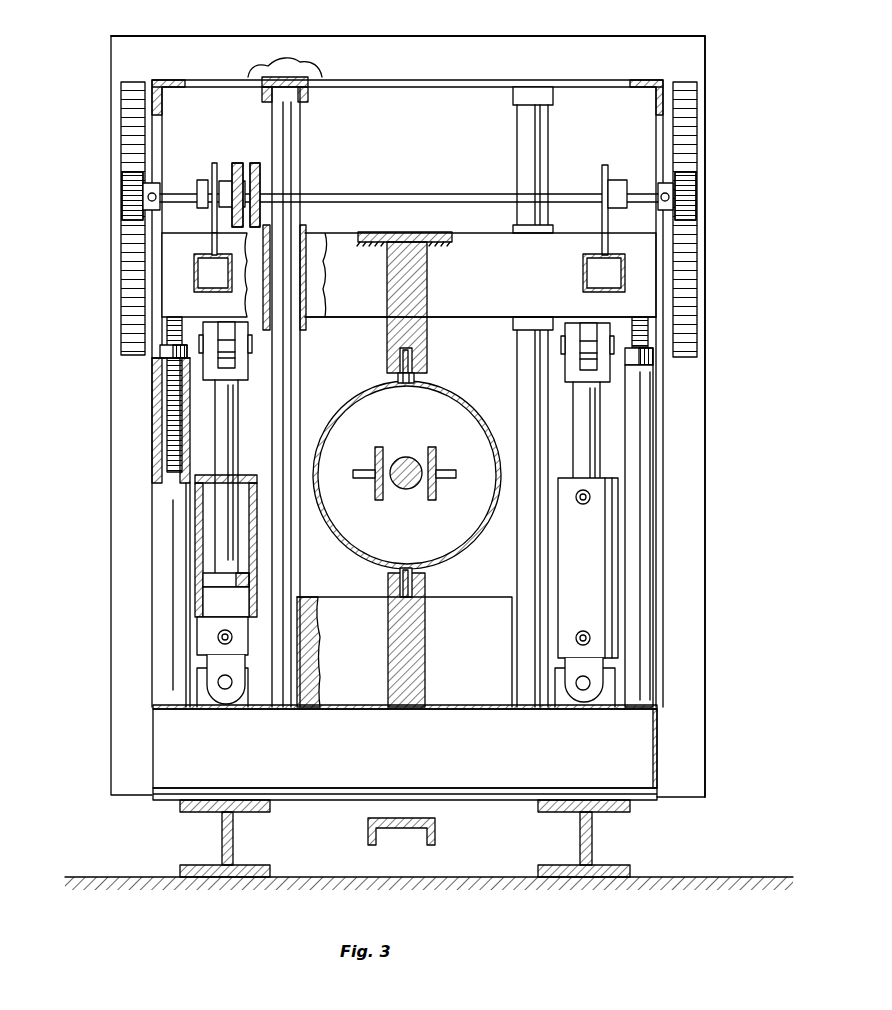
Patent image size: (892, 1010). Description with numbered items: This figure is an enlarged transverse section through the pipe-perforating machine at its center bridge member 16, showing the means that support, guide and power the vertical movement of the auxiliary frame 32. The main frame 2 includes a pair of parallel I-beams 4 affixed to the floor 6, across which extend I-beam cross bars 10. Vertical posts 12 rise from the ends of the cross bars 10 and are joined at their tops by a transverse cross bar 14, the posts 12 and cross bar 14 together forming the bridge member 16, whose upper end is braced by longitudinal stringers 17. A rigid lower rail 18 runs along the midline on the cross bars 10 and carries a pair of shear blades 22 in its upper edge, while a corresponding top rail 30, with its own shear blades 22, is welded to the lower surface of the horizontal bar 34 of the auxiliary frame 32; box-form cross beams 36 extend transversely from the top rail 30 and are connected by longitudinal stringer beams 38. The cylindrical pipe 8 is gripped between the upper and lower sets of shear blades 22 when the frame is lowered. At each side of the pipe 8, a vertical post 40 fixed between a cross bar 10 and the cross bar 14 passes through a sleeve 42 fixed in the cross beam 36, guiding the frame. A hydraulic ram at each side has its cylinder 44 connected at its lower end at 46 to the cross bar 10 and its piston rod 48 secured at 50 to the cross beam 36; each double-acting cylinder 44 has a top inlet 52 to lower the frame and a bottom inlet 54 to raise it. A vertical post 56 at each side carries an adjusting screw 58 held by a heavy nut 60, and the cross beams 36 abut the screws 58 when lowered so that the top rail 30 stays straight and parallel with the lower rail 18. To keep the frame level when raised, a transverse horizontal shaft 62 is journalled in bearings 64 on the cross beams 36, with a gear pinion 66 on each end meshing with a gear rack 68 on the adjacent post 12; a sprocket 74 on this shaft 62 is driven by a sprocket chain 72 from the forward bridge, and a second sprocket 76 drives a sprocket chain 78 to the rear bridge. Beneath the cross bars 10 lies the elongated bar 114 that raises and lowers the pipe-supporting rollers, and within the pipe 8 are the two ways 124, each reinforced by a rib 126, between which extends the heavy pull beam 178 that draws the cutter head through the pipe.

The main frame 2 is at (716, 535).
The I-beams 4 is at (222, 838).
The floor 6 is at (704, 877).
The cylindrical pipe 8 is at (476, 410).
The cross bars 10 is at (640, 748).
The vertical post 12 is at (111, 447).
The cross bar 14 is at (428, 36).
The bridge member 16 is at (716, 485).
The horizontal stringers 17 is at (178, 80).
The lower rail 18 is at (427, 633).
The shear blades 22 is at (398, 378).
The top rail 30 is at (427, 293).
The auxiliary frame 32 is at (490, 238).
The horizontal bar 34 is at (386, 232).
The cross beams 36 is at (345, 322).
The stringer beams 38 is at (198, 273).
The vertical post 40 is at (300, 129).
The sleeves 42 is at (306, 228).
The cylinder 44 is at (252, 475).
The cylinder lower end connection 46 is at (225, 690).
The piston rod 48 is at (238, 419).
The piston rod connection 50 is at (252, 340).
The top inlet 52 is at (581, 505).
The bottom inlet 54 is at (218, 637).
The vertical post 56 is at (160, 575).
The adjusting screw 58 is at (170, 385).
The nut 60 is at (162, 352).
The horizontal shaft 62 is at (400, 194).
The bearings 64 is at (200, 180).
The gear pinion 66 is at (122, 196).
The gear rack 68 is at (121, 131).
The sprocket chain 72 is at (236, 163).
The sprocket 74 is at (213, 212).
The second sprocket 76 is at (245, 190).
The sprocket chain 78 is at (255, 163).
The elongated bar 114 is at (400, 828).
The ways 124 is at (428, 447).
The rib 126 is at (363, 478).
The pull beam 178 is at (412, 490).